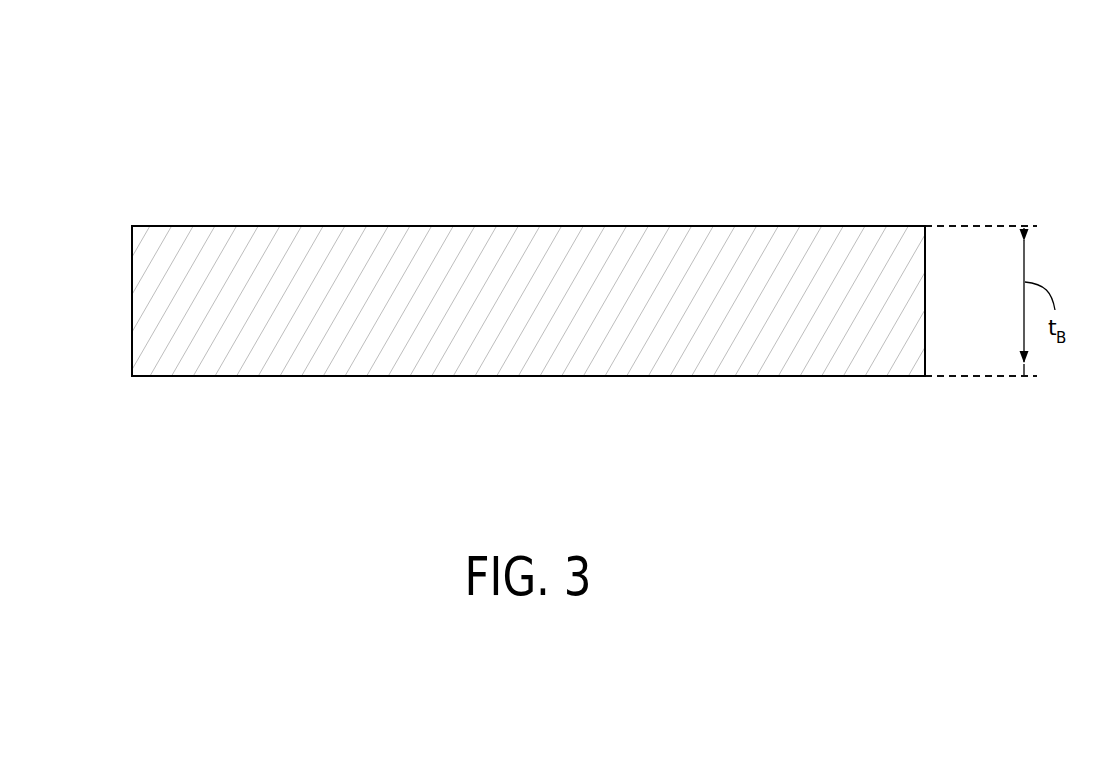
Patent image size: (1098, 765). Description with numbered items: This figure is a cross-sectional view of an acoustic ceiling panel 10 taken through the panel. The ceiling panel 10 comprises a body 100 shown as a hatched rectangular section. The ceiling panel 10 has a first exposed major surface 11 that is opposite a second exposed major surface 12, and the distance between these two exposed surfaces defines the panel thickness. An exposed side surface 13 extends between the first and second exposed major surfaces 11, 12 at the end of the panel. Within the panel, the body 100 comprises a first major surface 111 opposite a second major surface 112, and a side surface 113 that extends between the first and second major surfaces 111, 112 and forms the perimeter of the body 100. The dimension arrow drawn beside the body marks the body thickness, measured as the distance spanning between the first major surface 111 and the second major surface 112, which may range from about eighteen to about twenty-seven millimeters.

The ceiling panel 10 is at (969, 131).
The body 100 is at (179, 225).
The first exposed major surface 11 is at (617, 225).
The first major surface 111 is at (356, 225).
The second exposed major surface 12 is at (618, 377).
The second major surface 112 is at (357, 377).
The exposed side surface 13 is at (981, 301).
The side surface 113 is at (981, 301).